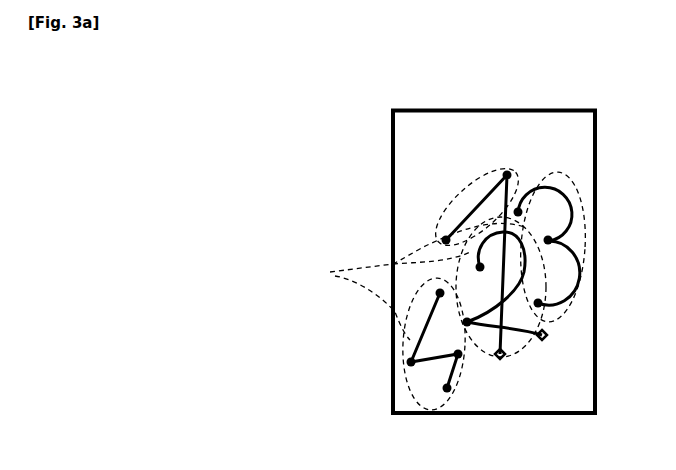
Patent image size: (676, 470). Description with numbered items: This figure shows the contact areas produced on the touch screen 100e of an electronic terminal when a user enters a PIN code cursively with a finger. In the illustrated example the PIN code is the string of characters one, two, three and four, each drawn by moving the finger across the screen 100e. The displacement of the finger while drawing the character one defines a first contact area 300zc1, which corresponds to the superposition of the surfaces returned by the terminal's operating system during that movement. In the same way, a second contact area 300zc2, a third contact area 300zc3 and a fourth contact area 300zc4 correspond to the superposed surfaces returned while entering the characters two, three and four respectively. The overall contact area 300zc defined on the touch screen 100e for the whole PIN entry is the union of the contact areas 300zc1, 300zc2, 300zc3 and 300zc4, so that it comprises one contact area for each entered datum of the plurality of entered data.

The touch screen 100e is at (488, 110).
The contact area 300zc is at (401, 281).
The first contact area 300zc1 is at (473, 163).
The second contact area 300zc2 is at (527, 342).
The third contact area 300zc3 is at (536, 182).
The fourth contact area 300zc4 is at (435, 411).